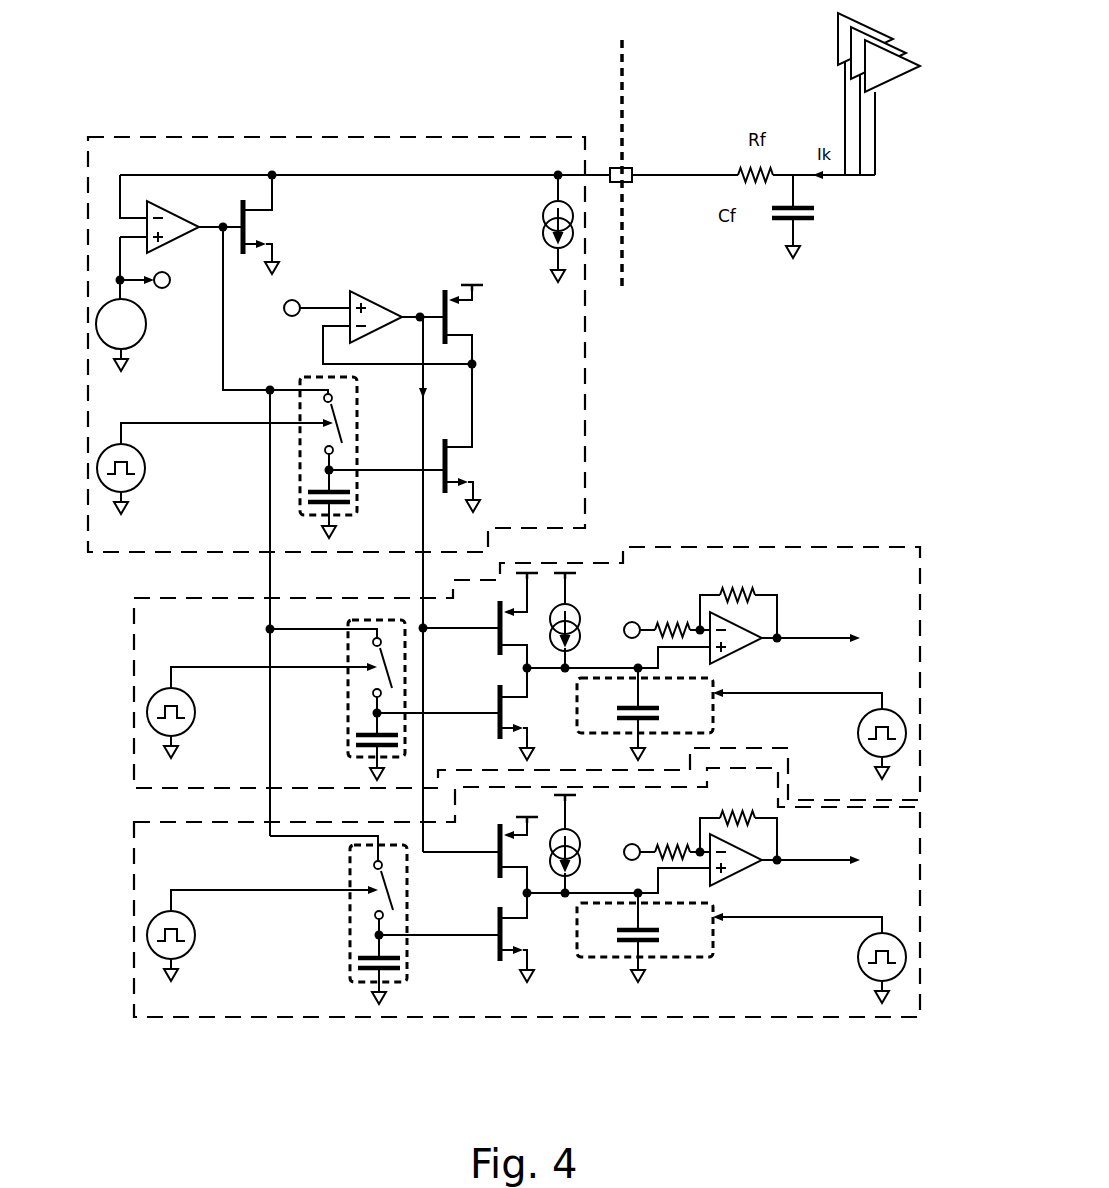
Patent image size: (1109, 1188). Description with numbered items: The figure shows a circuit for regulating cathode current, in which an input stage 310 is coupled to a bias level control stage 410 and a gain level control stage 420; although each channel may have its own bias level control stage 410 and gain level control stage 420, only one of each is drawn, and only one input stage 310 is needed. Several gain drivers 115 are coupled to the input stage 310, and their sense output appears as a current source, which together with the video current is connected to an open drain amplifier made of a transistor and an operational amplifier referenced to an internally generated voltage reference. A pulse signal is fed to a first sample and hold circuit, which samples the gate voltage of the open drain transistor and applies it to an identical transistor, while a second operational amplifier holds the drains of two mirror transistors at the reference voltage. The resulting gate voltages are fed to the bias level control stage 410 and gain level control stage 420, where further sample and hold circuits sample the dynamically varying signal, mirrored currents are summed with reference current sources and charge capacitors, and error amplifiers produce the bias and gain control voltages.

The gain drivers 115 is at (892, 72).
The input stage 310 is at (586, 345).
The bias level control stage 410 is at (795, 548).
The gain level control stage 420 is at (201, 1018).